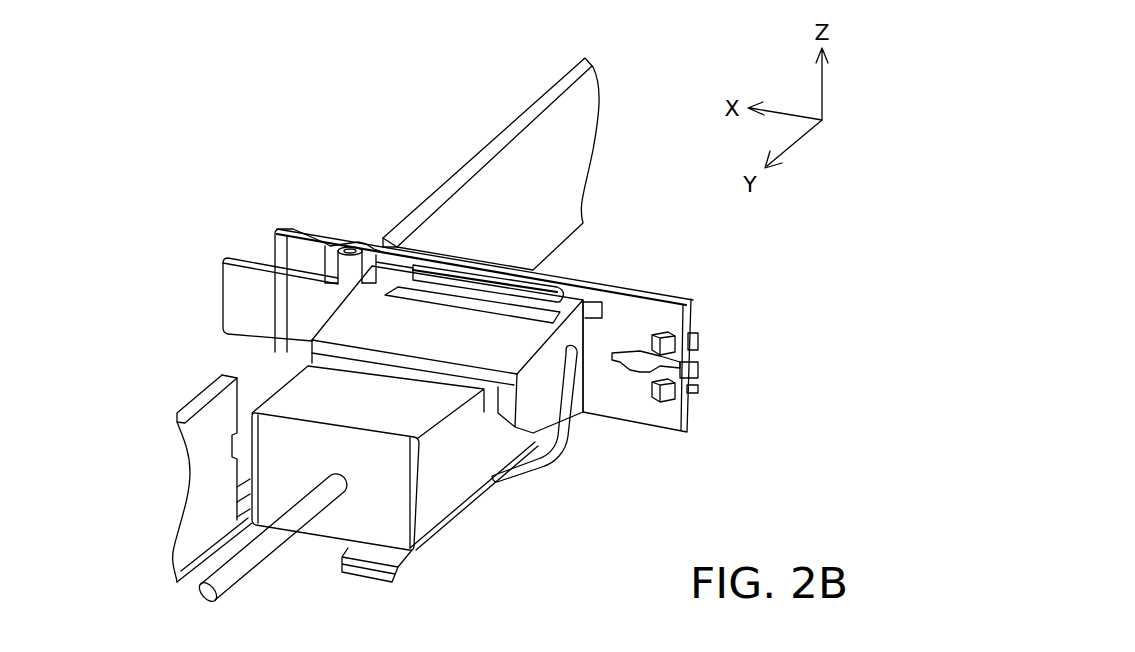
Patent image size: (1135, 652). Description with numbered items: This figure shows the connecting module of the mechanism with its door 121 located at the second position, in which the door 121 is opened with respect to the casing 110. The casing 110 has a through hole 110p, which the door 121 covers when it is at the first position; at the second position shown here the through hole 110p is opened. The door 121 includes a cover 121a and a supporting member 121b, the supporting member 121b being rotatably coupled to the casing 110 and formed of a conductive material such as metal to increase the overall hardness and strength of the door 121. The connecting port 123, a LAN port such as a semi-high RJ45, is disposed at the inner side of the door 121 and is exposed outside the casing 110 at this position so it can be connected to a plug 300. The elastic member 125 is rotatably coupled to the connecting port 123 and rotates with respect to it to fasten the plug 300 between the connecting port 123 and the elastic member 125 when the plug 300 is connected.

The casing 110 is at (465, 172).
The through hole 110p is at (233, 493).
The door 121 is at (563, 329).
The cover 121a is at (660, 293).
The supporting member 121b is at (673, 302).
The connecting port 123 is at (542, 402).
The elastic member 125 is at (552, 468).
The plug 300 is at (438, 507).